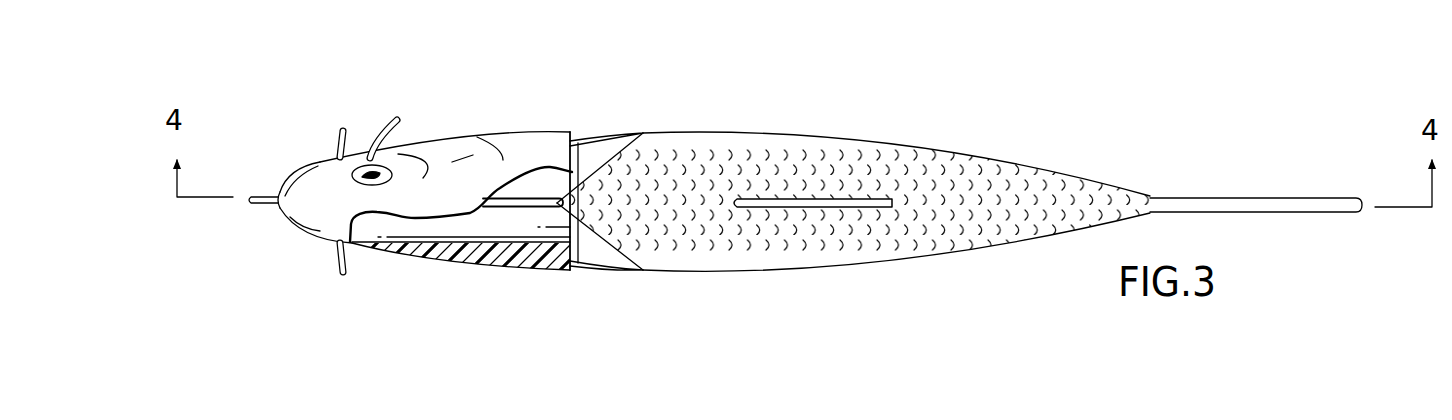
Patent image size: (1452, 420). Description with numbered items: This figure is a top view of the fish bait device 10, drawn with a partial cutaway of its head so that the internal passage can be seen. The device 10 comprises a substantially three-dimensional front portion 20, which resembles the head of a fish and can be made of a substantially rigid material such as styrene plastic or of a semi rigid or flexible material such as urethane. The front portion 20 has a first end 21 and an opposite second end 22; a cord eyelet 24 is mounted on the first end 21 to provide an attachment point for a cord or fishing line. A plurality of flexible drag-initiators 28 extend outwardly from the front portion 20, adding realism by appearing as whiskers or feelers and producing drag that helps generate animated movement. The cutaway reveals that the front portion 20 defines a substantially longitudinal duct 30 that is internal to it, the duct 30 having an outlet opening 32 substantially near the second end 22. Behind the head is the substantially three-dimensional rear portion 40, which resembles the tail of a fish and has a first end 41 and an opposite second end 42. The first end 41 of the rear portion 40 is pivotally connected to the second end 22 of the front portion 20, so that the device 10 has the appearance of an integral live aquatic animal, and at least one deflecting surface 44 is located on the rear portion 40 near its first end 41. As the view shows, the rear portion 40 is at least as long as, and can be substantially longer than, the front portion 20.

The device 10 is at (390, 292).
The front portion 20 is at (424, 138).
The first end 21 is at (286, 170).
The second end 22 is at (559, 126).
The cord eyelet 24 is at (262, 203).
The flexible drag-initiators 28 is at (336, 130).
The duct 30 is at (493, 220).
The outlet opening 32 is at (570, 168).
The rear portion 40 is at (964, 261).
The first end 41 is at (657, 127).
The second end 42 is at (1242, 197).
The deflecting surface 44 is at (596, 251).